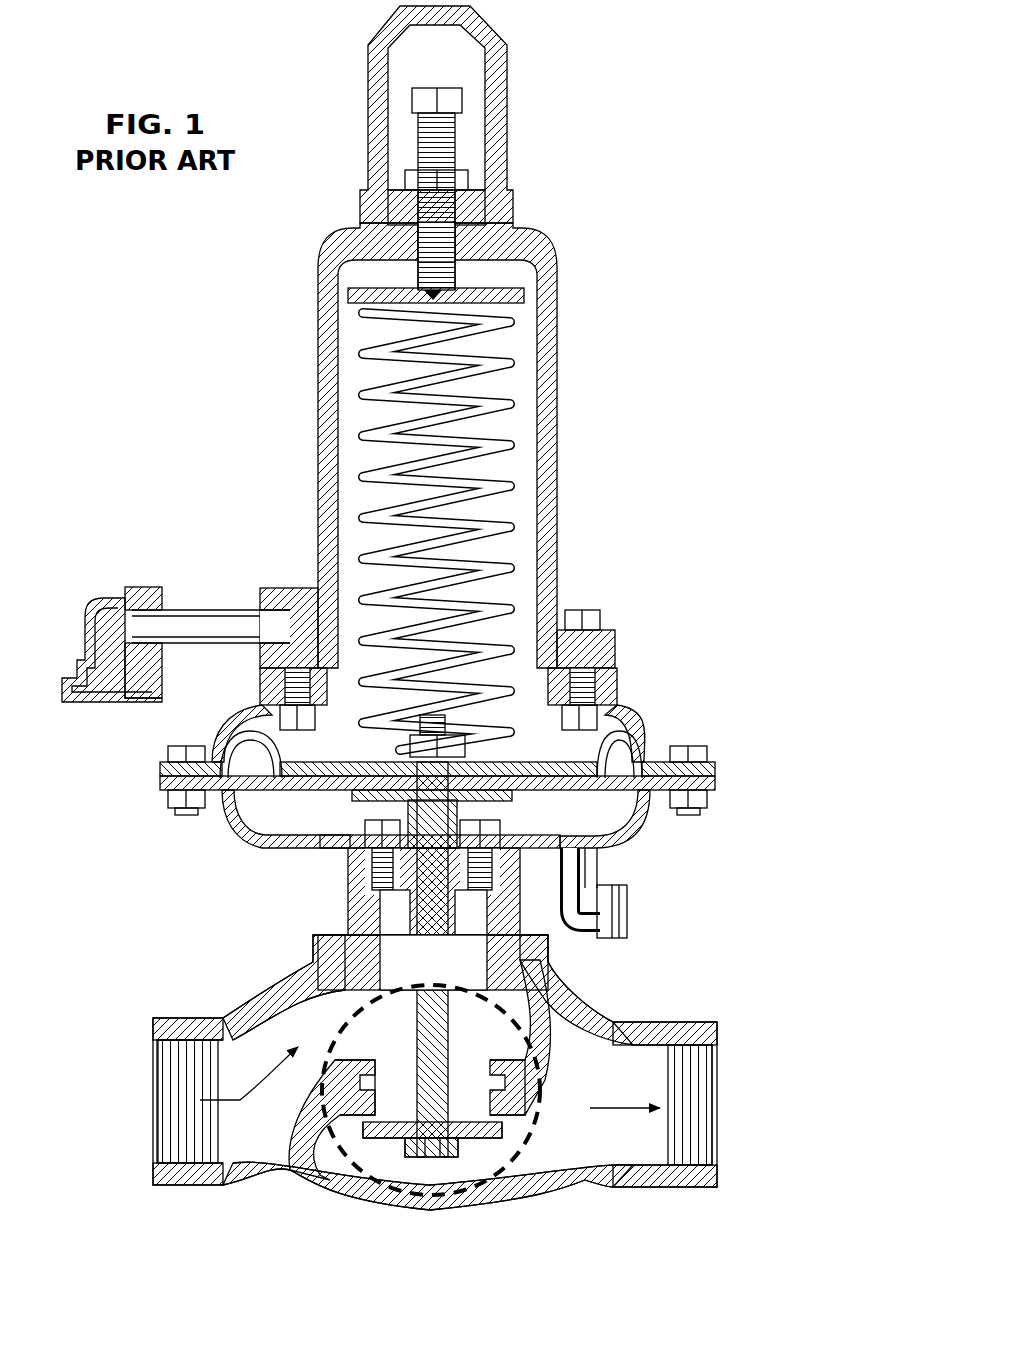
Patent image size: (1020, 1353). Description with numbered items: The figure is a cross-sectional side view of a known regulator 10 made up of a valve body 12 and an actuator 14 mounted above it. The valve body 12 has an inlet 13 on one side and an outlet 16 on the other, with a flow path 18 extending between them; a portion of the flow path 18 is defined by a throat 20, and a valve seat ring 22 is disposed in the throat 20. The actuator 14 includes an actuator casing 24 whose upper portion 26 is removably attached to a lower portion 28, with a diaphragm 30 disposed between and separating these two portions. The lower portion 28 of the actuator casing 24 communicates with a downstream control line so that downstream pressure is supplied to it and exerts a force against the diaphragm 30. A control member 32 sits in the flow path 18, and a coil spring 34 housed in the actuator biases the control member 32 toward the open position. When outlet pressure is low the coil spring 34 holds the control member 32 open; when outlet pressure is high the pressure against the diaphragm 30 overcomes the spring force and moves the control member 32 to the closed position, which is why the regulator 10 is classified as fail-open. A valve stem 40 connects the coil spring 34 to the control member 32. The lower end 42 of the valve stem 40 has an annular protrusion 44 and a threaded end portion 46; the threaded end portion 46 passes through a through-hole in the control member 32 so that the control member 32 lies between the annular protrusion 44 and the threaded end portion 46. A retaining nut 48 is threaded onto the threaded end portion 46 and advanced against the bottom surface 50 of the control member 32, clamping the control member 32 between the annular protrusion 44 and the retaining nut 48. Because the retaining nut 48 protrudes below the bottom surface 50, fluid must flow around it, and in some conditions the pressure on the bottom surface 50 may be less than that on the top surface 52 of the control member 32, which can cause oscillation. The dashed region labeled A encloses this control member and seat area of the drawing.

The regulator 10 is at (638, 205).
The valve body 12 is at (266, 972).
The inlet 13 is at (177, 1083).
The actuator 14 is at (240, 482).
The outlet 16 is at (697, 1092).
The flow path 18 is at (240, 1095).
The throat 20 is at (468, 1062).
The valve seat ring 22 is at (405, 1017).
The actuator casing 24 is at (640, 712).
The upper portion 26 is at (244, 712).
The lower portion 28 is at (245, 848).
The diaphragm 30 is at (600, 790).
The control member 32 is at (493, 1147).
The coil spring 34 is at (512, 462).
The valve stem 40 is at (353, 1052).
The lower end 42 is at (410, 1108).
The annular protrusion 44 is at (480, 1120).
The threaded end portion 46 is at (430, 1143).
The retaining nut 48 is at (403, 1150).
The bottom surface 50 is at (467, 1143).
The top surface 52 is at (510, 1102).
The detail region A is at (355, 1160).